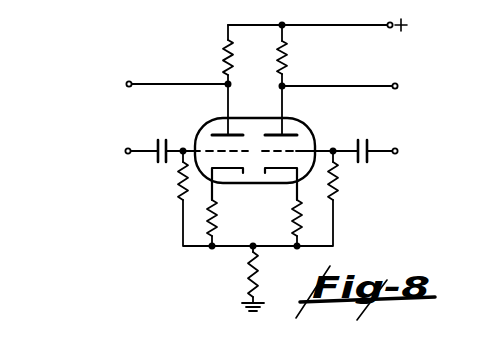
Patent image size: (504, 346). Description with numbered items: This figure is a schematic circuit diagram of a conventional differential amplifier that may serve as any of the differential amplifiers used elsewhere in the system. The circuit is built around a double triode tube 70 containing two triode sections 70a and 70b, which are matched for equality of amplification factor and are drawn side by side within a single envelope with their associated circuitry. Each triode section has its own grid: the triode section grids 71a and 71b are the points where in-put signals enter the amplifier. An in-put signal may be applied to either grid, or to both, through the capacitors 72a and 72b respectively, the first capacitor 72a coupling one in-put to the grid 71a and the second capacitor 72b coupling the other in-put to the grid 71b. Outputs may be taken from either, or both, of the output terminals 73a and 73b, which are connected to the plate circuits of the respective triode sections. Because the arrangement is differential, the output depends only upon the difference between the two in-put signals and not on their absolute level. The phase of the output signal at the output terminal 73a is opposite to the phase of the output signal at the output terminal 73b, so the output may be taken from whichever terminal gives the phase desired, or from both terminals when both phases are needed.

The double triode tube 70 is at (256, 117).
The triode section 70a is at (208, 123).
The triode section 70b is at (297, 123).
The triode section grid 71a is at (213, 149).
The triode section grid 71b is at (294, 149).
The capacitor 72a is at (153, 162).
The capacitor 72b is at (396, 158).
The output terminal 73a is at (131, 80).
The output terminal 73b is at (393, 82).